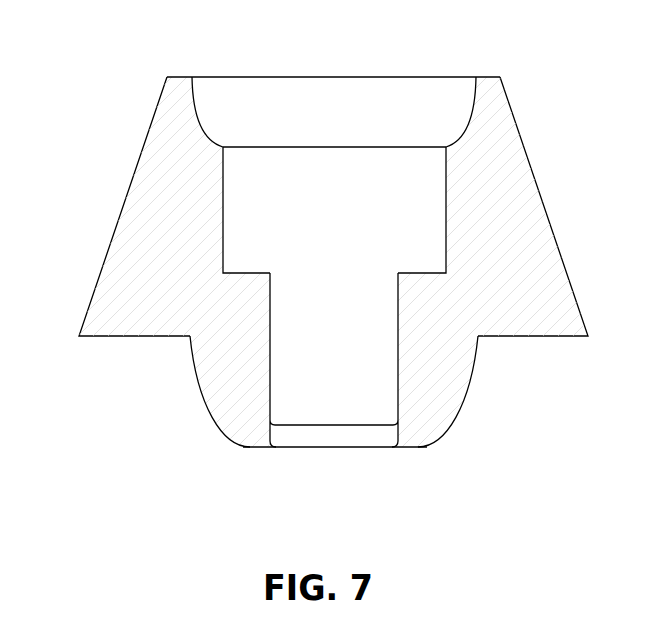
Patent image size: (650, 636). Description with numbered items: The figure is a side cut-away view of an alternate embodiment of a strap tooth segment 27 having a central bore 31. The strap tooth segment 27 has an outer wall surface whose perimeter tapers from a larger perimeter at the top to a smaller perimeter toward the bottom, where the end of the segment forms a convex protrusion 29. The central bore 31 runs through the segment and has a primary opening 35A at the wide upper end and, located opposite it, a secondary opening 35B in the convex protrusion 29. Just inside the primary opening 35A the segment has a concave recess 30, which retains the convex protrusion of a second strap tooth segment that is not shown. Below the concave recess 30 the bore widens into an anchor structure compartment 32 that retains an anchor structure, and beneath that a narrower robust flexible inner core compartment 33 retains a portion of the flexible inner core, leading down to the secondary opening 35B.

The strap tooth segment 27 is at (142, 153).
The primary opening 35A is at (393, 77).
The concave recess 30 is at (468, 103).
The anchor structure compartment 32 is at (445, 190).
The central bore 31 is at (360, 235).
The robust flexible inner core compartment 33 is at (270, 328).
The convex protrusion 29 is at (205, 397).
The secondary opening 35B is at (300, 446).